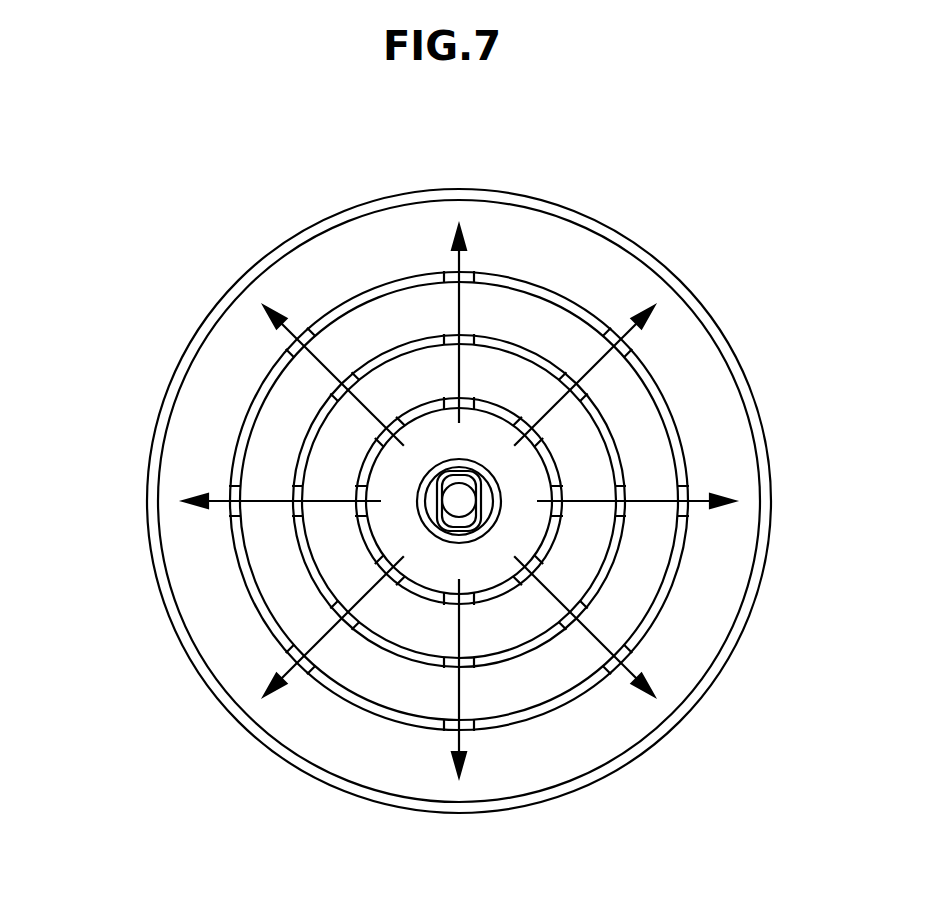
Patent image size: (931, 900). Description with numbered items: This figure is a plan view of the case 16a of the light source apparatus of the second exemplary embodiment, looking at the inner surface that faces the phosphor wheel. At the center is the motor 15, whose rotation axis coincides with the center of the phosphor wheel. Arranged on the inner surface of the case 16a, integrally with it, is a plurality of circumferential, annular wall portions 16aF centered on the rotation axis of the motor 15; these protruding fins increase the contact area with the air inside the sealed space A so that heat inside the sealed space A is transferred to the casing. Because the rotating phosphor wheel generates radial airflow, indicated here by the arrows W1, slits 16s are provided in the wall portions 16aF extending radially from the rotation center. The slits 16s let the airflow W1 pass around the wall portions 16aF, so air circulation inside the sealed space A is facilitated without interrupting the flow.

The motor 15 is at (514, 349).
The case 16a is at (459, 501).
The slits 16s is at (453, 501).
The wall portions 16aF is at (374, 571).
The sealed space A is at (326, 207).
The arrows indicating airflow W1 is at (459, 548).